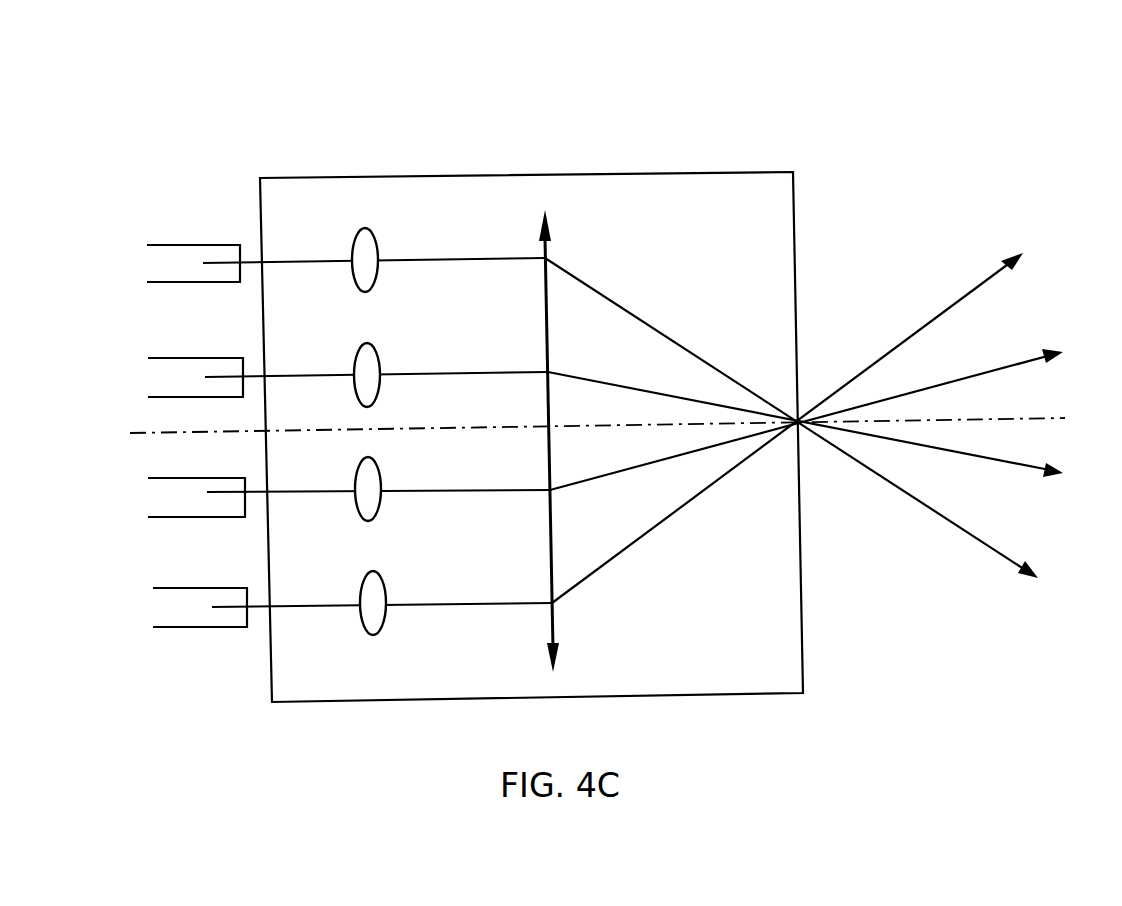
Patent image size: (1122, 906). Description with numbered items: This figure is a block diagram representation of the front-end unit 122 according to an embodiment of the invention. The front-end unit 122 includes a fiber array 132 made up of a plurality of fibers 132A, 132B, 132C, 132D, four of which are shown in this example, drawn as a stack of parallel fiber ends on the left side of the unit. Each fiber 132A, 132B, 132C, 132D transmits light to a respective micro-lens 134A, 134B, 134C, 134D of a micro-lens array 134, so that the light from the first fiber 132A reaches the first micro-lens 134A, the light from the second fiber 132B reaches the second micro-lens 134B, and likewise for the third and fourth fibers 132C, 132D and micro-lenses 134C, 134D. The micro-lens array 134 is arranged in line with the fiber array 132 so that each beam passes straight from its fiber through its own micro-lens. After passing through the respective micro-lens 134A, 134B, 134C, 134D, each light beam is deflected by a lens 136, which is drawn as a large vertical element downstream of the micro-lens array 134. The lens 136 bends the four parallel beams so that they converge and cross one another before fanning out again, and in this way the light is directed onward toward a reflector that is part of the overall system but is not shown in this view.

The front-end unit 122 is at (868, 172).
The fiber array 132 is at (188, 137).
The fiber 132A is at (163, 244).
The fiber 132B is at (172, 358).
The fiber 132C is at (168, 517).
The fiber 132D is at (172, 628).
The micro-lens array 134 is at (372, 143).
The micro-lens 134A is at (378, 237).
The micro-lens 134B is at (380, 351).
The micro-lens 134C is at (382, 500).
The micro-lens 134D is at (385, 622).
The lens 136 is at (551, 229).